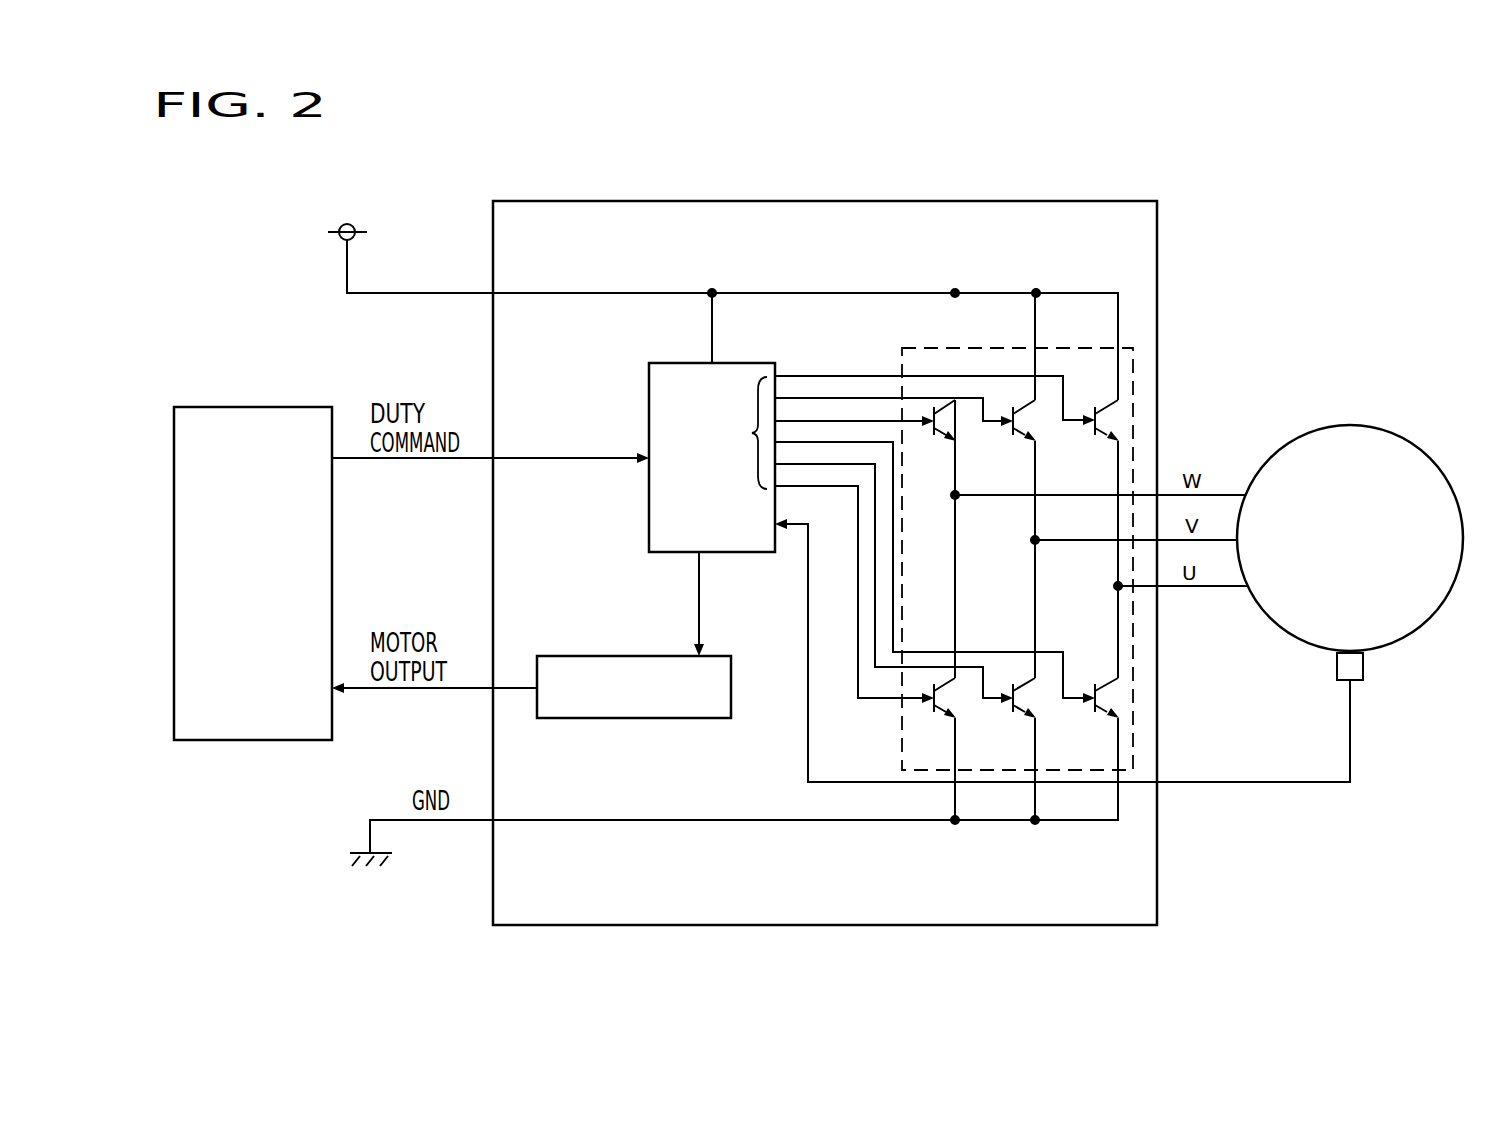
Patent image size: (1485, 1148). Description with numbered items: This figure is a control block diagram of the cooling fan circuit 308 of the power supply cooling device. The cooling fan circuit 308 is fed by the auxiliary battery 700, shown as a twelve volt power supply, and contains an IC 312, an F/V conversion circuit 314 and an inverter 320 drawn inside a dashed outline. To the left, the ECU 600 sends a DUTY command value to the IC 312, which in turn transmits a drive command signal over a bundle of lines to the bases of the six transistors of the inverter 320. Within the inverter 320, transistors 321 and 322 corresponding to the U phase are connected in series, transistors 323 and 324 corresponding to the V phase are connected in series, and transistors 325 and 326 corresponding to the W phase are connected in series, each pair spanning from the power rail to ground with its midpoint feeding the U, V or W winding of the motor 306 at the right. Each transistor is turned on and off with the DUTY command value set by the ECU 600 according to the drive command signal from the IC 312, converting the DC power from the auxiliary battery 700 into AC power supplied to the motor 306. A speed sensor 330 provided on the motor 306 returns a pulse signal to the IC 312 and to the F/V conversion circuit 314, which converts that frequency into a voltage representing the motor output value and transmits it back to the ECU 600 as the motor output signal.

The auxiliary battery 700 is at (351, 225).
The ECU 600 is at (248, 407).
The cooling fan circuit 308 is at (1000, 201).
The IC 312 is at (649, 398).
The F/V conversion circuit 314 is at (568, 656).
The inverter 320 is at (1090, 348).
The transistor 321 is at (1088, 445).
The transistor 322 is at (1088, 721).
The transistor 323 is at (1006, 445).
The transistor 324 is at (1006, 721).
The transistor 325 is at (926, 445).
The transistor 326 is at (926, 721).
The motor 306 is at (1375, 426).
The speed sensor 330 is at (1363, 668).